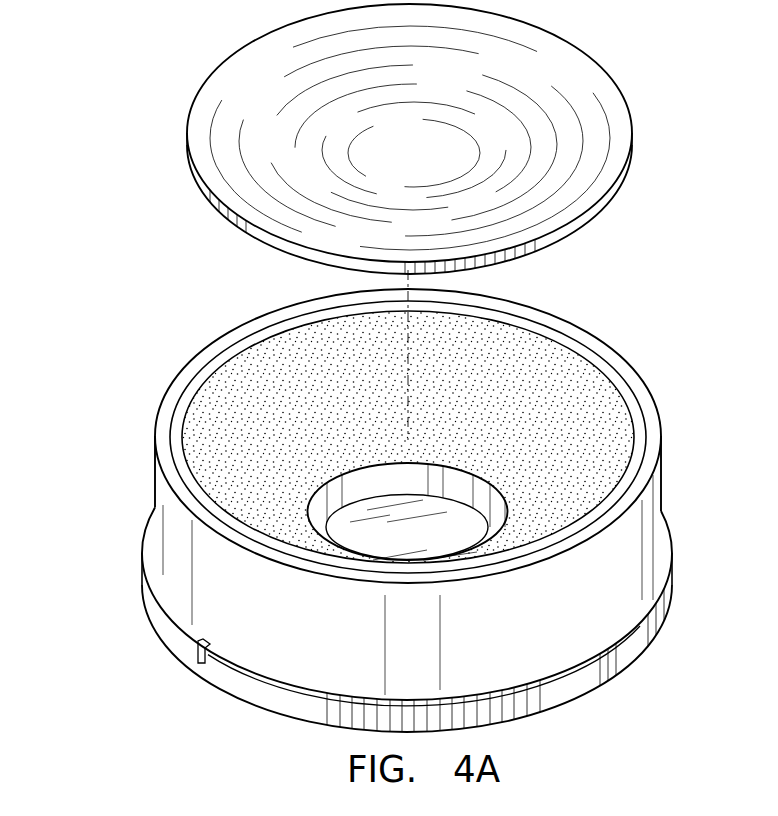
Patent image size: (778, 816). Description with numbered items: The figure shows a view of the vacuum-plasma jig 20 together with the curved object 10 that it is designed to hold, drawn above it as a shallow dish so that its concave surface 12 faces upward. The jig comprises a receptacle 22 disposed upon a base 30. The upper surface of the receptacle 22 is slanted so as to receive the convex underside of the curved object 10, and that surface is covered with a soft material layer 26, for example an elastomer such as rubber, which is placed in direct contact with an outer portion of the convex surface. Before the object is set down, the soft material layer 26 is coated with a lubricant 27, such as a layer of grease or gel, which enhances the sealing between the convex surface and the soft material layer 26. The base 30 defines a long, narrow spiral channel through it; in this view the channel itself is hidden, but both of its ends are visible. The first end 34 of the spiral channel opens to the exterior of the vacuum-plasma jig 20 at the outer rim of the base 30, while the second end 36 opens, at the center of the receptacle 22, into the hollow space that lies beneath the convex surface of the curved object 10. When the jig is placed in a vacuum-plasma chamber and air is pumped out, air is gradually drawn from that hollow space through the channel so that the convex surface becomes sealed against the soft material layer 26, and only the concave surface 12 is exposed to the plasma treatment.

The curved object 10 is at (413, 137).
The concave surface 12 is at (580, 73).
The vacuum-plasma jig 20 is at (124, 433).
The receptacle 22 is at (182, 388).
The soft material layer 26 is at (403, 428).
The lubricant 27 is at (292, 380).
The base 30 is at (603, 668).
The first end of the spiral channel 34 is at (200, 656).
The second end of the spiral channel 36 is at (408, 542).